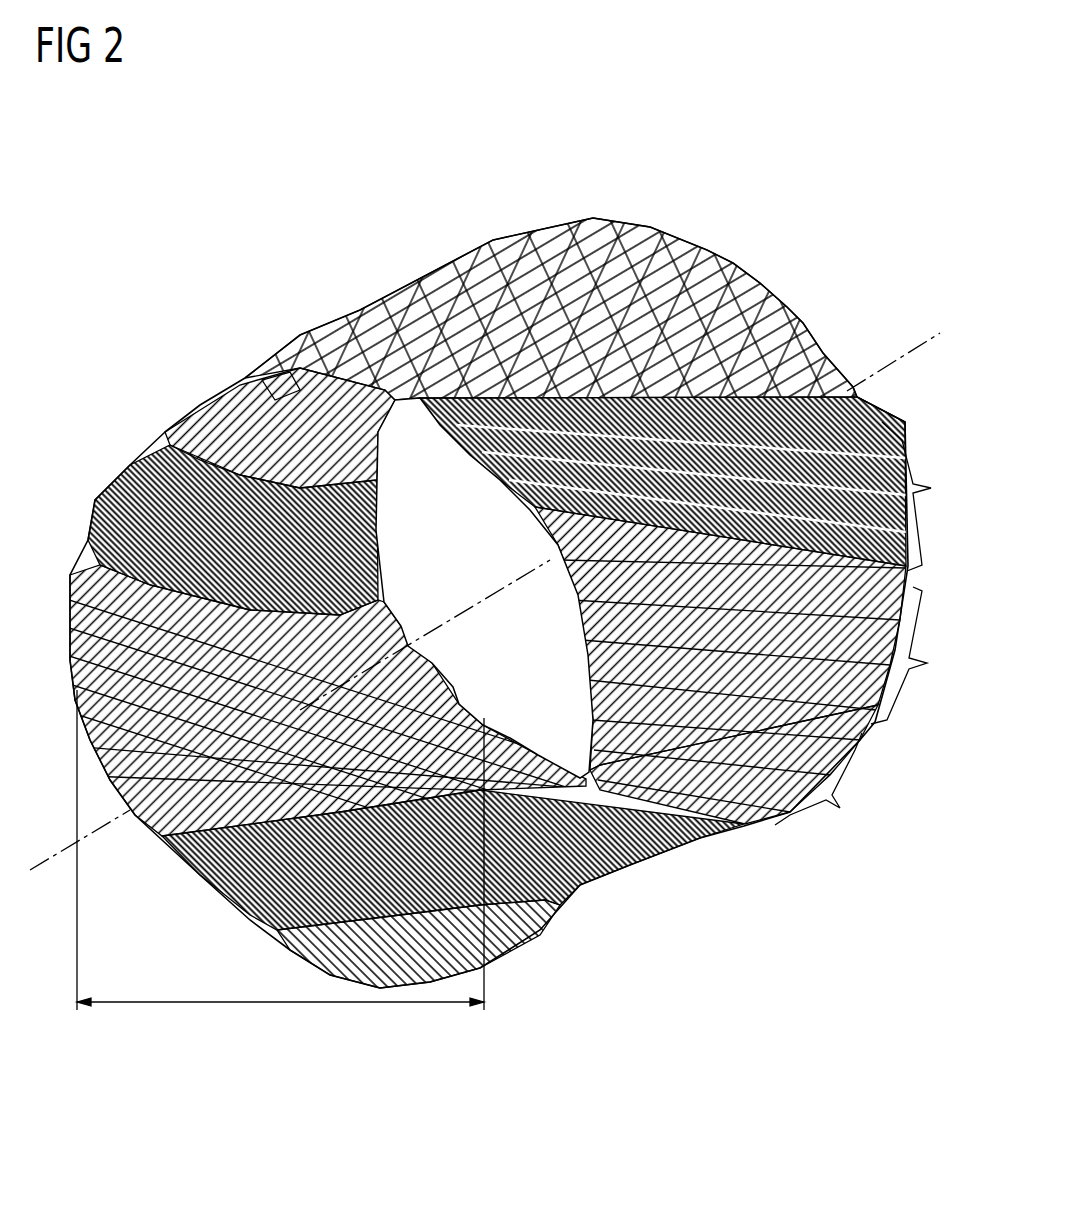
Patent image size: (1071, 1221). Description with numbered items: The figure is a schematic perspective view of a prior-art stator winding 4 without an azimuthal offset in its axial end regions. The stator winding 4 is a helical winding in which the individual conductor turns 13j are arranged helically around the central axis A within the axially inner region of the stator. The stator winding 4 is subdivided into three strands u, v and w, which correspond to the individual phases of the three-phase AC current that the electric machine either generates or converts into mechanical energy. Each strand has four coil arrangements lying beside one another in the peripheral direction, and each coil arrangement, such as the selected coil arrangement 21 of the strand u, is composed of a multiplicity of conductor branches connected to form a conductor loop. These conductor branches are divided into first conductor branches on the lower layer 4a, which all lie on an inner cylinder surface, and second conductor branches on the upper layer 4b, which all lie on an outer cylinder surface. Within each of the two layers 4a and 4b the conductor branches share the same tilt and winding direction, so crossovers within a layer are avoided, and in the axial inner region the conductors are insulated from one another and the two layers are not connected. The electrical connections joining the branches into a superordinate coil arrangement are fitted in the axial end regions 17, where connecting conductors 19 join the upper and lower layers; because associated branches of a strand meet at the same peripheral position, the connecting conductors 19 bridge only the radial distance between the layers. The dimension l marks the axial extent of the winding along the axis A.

The stator winding 4 is at (247, 193).
The lower layer 4a is at (263, 414).
The upper layer 4b is at (277, 390).
The conductor turns 13j is at (724, 447).
The axial end regions 17 is at (527, 212).
The connecting conductors 19 is at (343, 383).
The coil arrangement 21 is at (744, 826).
The central axis A is at (898, 358).
The strand w is at (906, 484).
The strand v is at (740, 659).
The strand u is at (734, 771).
The axial length l is at (277, 1003).